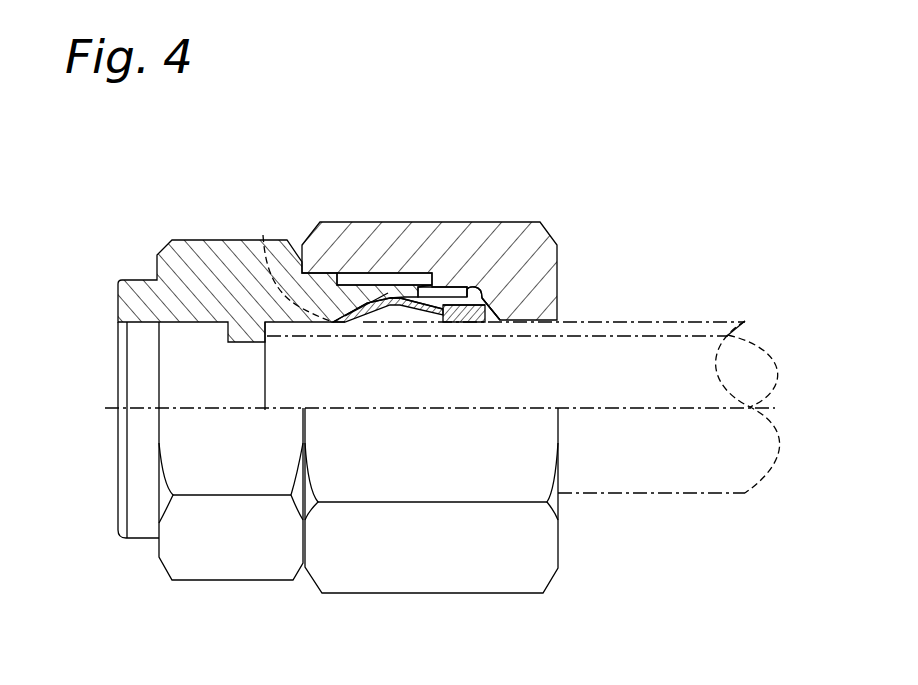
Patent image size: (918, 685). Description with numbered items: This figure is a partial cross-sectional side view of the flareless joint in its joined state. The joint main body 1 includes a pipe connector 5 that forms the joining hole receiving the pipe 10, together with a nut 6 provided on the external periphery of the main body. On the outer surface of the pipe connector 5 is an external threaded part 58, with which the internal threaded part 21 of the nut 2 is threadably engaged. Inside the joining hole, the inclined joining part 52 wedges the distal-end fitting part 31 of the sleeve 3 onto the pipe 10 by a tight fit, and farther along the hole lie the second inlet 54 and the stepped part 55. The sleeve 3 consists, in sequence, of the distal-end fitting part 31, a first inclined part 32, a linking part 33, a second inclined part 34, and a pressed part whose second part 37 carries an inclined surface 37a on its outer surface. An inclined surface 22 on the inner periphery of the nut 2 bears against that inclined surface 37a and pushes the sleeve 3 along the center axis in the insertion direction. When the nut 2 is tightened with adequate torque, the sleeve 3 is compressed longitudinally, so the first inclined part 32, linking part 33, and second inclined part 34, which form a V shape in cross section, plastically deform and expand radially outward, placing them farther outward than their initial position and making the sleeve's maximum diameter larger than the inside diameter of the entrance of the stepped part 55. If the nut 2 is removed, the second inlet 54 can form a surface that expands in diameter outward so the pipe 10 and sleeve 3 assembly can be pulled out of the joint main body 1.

The joint main body 1 is at (438, 395).
The nut 2 is at (407, 577).
The sleeve 3 is at (387, 395).
The pipe connector 5 is at (362, 274).
The nut 6 is at (234, 567).
The pipe 10 is at (678, 493).
The internal threaded part 21 is at (387, 323).
The inclined surface 22 is at (490, 305).
The distal-end fitting part 31 is at (342, 323).
The first inclined part 32 is at (365, 323).
The linking part 33 is at (397, 323).
The second inclined part 34 is at (425, 323).
The second part 37 is at (484, 325).
The inclined surface 37a is at (491, 309).
The joining part 52 is at (263, 235).
The second inlet 54 is at (440, 286).
The stepped part 55 is at (482, 292).
The external threaded part 58 is at (392, 297).